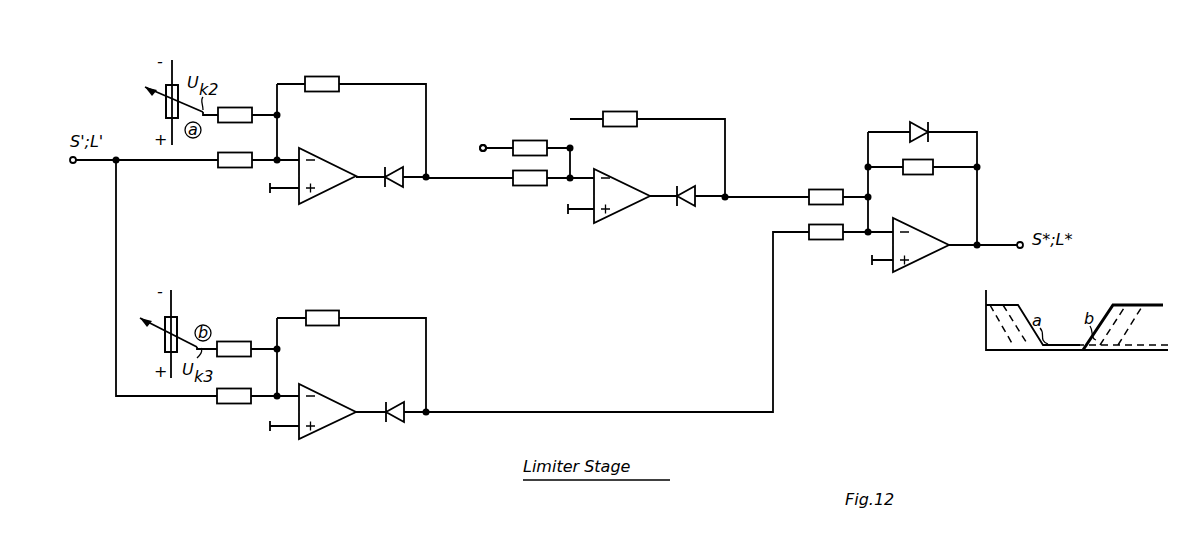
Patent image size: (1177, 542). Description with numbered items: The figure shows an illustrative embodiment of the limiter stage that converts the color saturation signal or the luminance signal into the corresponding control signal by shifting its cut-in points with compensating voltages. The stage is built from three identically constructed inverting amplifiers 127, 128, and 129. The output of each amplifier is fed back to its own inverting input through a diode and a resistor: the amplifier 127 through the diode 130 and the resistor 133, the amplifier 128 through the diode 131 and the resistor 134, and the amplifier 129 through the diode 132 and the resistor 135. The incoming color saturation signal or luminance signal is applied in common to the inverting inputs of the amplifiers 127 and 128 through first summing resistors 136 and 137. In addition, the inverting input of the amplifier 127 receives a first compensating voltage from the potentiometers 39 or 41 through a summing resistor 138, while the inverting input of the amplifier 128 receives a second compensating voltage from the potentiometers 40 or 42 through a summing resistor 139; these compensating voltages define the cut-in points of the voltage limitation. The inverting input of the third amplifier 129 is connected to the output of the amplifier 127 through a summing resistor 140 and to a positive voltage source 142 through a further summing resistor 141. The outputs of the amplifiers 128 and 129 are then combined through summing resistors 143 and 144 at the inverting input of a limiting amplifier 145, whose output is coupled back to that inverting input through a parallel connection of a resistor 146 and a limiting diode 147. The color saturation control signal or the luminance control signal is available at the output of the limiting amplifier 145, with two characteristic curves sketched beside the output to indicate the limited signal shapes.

The potentiometer 39 is at (160, 84).
The potentiometer 41 is at (158, 89).
The potentiometer 40 is at (178, 322).
The potentiometer 42 is at (186, 322).
The inverting amplifier 127 is at (334, 190).
The inverting amplifier 128 is at (333, 426).
The inverting amplifier 129 is at (622, 210).
The diode 130 is at (393, 168).
The diode 131 is at (393, 422).
The diode 132 is at (685, 187).
The resistor 133 is at (321, 77).
The resistor 134 is at (321, 310).
The resistor 135 is at (620, 112).
The first summing resistor 136 is at (232, 168).
The first summing resistor 137 is at (232, 403).
The summing resistor 138 is at (247, 107).
The summing resistor 139 is at (234, 341).
The summing resistor 140 is at (529, 186).
The further summing resistor 141 is at (528, 141).
The positive voltage source 142 is at (481, 145).
The summing resistor 143 is at (823, 190).
The summing resistor 144 is at (823, 240).
The limiting amplifier 145 is at (926, 255).
The resistor 146 is at (923, 176).
The limiting diode 147 is at (919, 122).